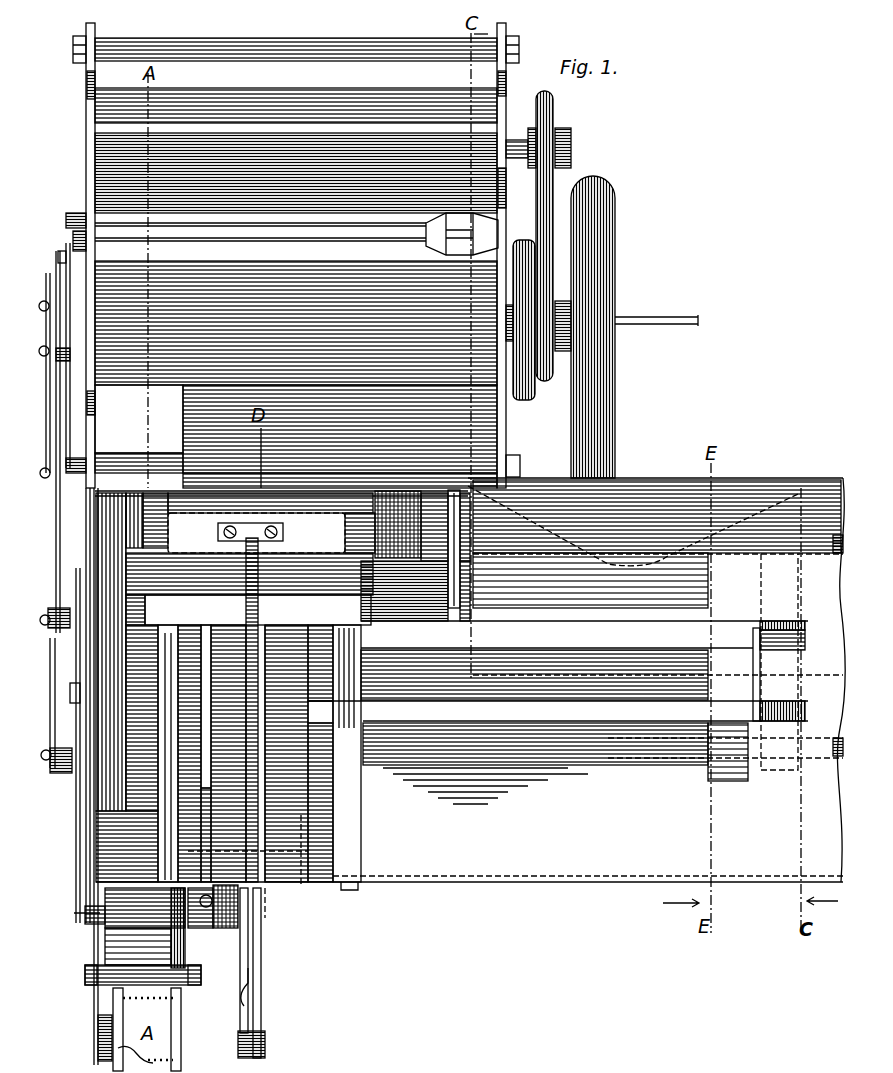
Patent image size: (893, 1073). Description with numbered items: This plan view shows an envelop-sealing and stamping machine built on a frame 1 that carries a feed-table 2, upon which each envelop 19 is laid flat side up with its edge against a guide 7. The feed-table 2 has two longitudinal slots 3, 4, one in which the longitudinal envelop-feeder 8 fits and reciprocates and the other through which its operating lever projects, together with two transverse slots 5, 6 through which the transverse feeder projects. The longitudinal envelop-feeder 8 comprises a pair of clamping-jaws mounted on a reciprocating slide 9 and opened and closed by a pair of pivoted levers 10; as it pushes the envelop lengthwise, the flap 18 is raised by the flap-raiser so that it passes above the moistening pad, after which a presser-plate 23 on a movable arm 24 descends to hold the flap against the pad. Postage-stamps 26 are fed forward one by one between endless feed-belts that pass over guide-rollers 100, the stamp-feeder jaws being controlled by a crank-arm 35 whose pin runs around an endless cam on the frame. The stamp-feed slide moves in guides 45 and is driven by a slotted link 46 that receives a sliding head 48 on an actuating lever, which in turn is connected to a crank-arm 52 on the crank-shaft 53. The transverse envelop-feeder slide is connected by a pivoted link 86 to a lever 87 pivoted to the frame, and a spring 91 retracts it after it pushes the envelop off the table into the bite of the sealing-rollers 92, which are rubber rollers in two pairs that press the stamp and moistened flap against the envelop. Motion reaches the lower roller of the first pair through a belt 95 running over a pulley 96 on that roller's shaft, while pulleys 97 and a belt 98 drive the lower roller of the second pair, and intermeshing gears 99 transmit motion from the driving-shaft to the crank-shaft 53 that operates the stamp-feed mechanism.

The frame 1 is at (495, 94).
The feed-table 2 is at (556, 846).
The longitudinal slot 3 is at (518, 625).
The longitudinal slot 4 is at (578, 707).
The transverse slot 5 is at (195, 636).
The transverse slot 6 is at (310, 618).
The guide 7 is at (740, 479).
The longitudinal envelop-feeder 8 is at (770, 634).
The reciprocating slide 9 is at (790, 702).
The pivoted lever 10 is at (745, 683).
The flap 18 is at (600, 496).
The envelop 19 is at (478, 596).
The presser-plate 23 is at (320, 528).
The movable arm 24 is at (246, 640).
The postage-stamps 26 is at (150, 1040).
The crank-arm 35 is at (62, 690).
The guides 45 is at (72, 824).
The link 46 is at (45, 546).
The sliding head 48 is at (45, 350).
The crank-arm 52 is at (61, 229).
The shaft 53 is at (257, 222).
The pivoted link 86 is at (250, 1002).
The lever 87 is at (240, 983).
The spring 91 is at (218, 918).
The sealing-rollers 92 is at (340, 198).
The belt 95 is at (517, 388).
The pulley 96 is at (538, 284).
The pulleys 97 is at (540, 116).
The belt 98 is at (532, 187).
The intermeshing gears 99 is at (457, 233).
The guide-rollers 100 is at (105, 913).